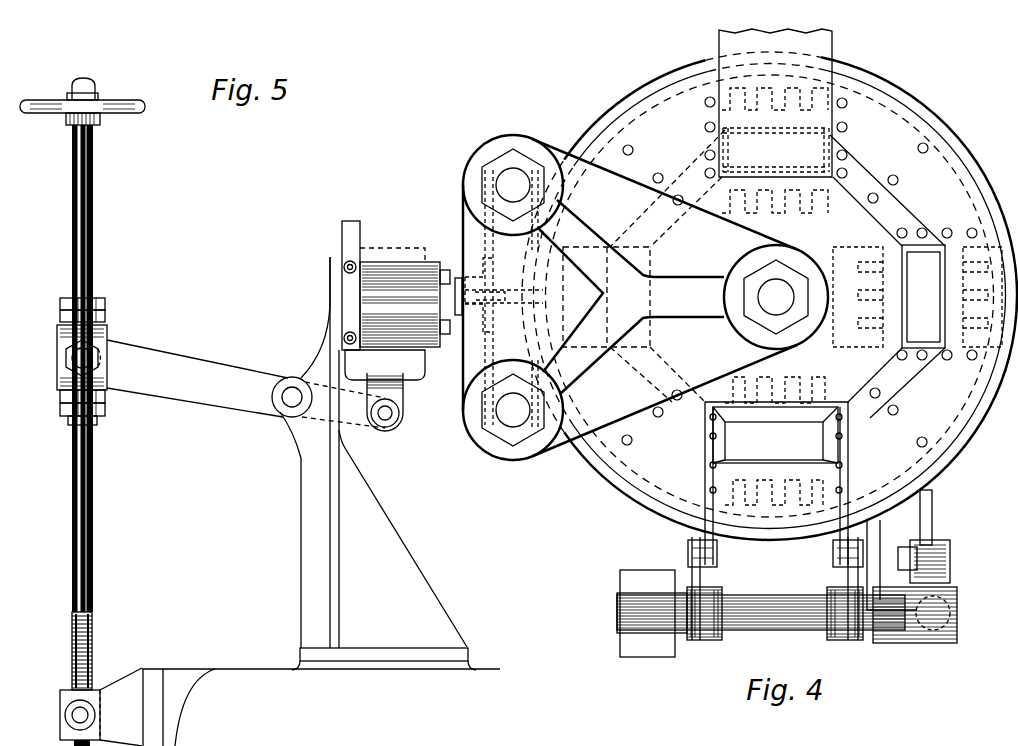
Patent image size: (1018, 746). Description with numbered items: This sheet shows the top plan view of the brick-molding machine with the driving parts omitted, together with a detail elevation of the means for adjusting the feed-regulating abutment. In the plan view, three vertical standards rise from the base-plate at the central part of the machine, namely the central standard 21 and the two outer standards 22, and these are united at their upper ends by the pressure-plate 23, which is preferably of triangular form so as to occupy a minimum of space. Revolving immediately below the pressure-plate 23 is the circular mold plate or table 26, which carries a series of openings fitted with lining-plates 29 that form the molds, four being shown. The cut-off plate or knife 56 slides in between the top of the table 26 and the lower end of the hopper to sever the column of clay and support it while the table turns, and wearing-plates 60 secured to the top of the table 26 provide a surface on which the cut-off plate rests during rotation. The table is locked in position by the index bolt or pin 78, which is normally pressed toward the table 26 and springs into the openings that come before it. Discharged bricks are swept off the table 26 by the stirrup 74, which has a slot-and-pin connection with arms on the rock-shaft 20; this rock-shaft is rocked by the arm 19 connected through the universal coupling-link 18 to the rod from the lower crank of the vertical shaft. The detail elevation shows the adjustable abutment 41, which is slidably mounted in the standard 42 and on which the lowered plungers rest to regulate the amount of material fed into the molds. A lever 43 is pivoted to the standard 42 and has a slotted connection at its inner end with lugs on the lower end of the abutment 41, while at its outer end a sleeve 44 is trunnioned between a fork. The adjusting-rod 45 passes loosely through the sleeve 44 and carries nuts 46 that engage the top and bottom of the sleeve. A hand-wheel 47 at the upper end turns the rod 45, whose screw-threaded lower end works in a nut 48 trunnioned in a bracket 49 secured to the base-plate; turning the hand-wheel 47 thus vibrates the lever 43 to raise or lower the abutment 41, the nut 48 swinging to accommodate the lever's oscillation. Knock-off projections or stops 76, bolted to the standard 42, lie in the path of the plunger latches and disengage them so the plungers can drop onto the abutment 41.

In FIG. 4, the universal coupling-link 18 is at (945, 572).
In FIG. 4, the arm 19 is at (945, 622).
In FIG. 4, the rock-shaft 20 is at (766, 622).
In FIG. 4, the central standard 21 is at (776, 297).
In FIG. 4, the vertical standards 22 is at (513, 297).
In FIG. 4, the pressure-plate 23 is at (598, 412).
In FIG. 4, the mold plate or table 26 is at (643, 467).
In FIG. 4, the lining-plates 29 is at (746, 425).
In FIG. 5, the adjustable abutment 41 is at (390, 255).
In FIG. 5, the standard 42 is at (333, 463).
In FIG. 5, the lever 43 is at (246, 384).
In FIG. 5, the sleeve 44 is at (108, 340).
In FIG. 5, the adjusting-rod 45 is at (95, 262).
In FIG. 5, the nuts 46 is at (62, 322).
In FIG. 5, the hand-wheel 47 is at (145, 108).
In FIG. 5, the nut 48 is at (62, 698).
In FIG. 5, the bracket 49 is at (162, 707).
In FIG. 4, the cut-off plate or knife 56 is at (813, 42).
In FIG. 4, the wearing-plates 60 is at (890, 208).
In FIG. 4, the stirrup 74 is at (843, 468).
In FIG. 5, the knock-off projections or stops 76 is at (343, 225).
In FIG. 5, the index bolt or pin 78 is at (452, 298).